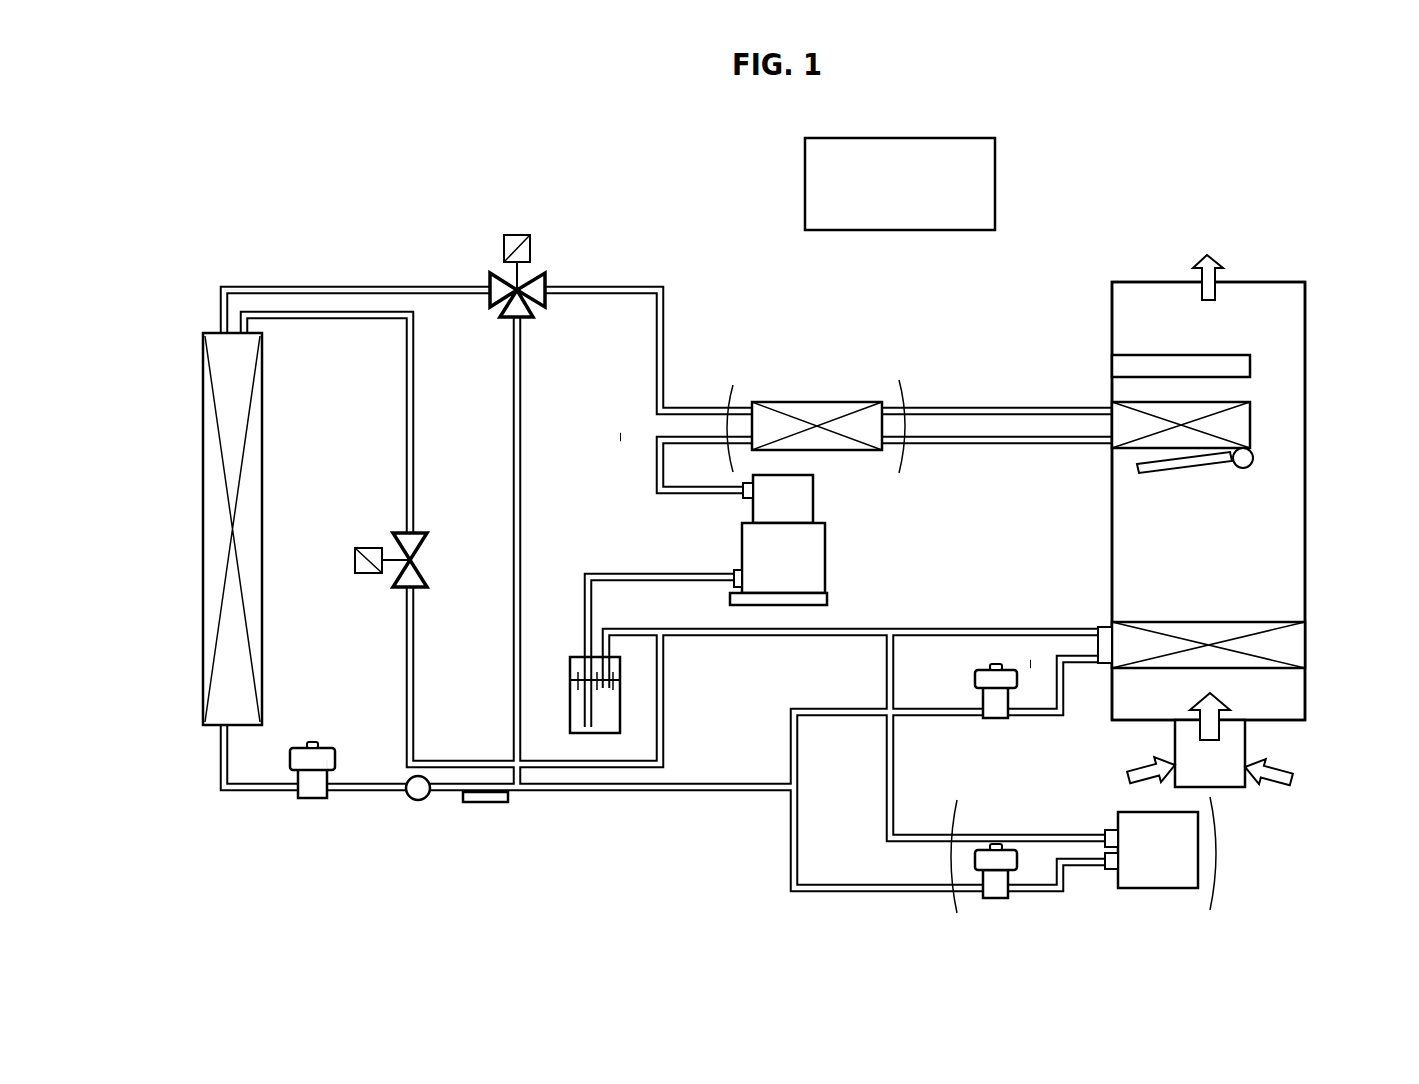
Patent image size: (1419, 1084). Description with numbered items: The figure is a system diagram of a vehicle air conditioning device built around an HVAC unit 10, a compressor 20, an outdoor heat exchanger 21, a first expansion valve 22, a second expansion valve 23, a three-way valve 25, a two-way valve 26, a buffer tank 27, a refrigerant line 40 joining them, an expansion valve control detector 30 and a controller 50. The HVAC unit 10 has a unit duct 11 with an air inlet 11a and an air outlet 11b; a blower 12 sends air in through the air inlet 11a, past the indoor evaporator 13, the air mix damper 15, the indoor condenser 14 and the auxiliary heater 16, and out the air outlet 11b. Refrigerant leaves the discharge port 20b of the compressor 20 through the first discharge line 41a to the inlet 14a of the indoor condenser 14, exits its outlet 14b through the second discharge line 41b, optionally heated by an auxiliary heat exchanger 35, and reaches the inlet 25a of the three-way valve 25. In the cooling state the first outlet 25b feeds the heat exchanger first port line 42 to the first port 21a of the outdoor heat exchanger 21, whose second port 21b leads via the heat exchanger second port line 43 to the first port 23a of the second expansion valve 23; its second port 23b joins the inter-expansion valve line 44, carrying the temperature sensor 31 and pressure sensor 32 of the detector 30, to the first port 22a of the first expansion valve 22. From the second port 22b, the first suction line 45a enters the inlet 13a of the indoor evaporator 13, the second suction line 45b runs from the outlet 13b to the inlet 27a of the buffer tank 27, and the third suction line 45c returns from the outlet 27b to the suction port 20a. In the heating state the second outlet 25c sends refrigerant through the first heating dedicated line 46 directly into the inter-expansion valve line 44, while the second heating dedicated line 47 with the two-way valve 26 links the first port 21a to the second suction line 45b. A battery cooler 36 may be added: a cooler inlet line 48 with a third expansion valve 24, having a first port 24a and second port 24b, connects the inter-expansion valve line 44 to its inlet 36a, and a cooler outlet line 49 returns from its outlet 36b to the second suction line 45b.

The HVAC unit 10 is at (1308, 301).
The unit duct 11 is at (1306, 513).
The air inlet 11a is at (1248, 725).
The air outlet 11b is at (1280, 282).
The blower 12 is at (1232, 790).
The indoor evaporator 13 is at (1296, 640).
The inlet 13a is at (1098, 662).
The outlet 13b is at (1098, 628).
The indoor condenser 14 is at (1250, 420).
The inlet 14a is at (1111, 449).
The outlet 14b is at (1111, 403).
The air mix damper 15 is at (1253, 456).
The auxiliary heater 16 is at (1248, 364).
The compressor 20 is at (812, 558).
The suction port 20a is at (733, 575).
The discharge port 20b is at (742, 492).
The outdoor heat exchanger 21 is at (205, 460).
The first port 21a is at (233, 330).
The second port 21b is at (222, 738).
The first expansion valve 22 is at (996, 719).
The first port 22a is at (984, 719).
The second port 22b is at (1007, 719).
The second expansion valve 23 is at (312, 799).
The first port 23a is at (297, 799).
The second port 23b is at (336, 762).
The third expansion valve 24 is at (996, 899).
The first port 24a is at (984, 899).
The second port 24b is at (1007, 899).
The three-way valve 25 is at (520, 233).
The inlet 25a is at (546, 285).
The first outlet 25b is at (490, 280).
The second outlet 25c is at (506, 314).
The two-way valve 26 is at (365, 548).
The buffer tank 27 is at (570, 720).
The inlet 27a is at (611, 656).
The outlet 27b is at (584, 656).
The expansion valve control detector 30 is at (497, 870).
The temperature sensor 31 is at (487, 803).
The pressure sensor 32 is at (418, 801).
The auxiliary heat exchanger 35 is at (810, 400).
The battery cooler 36 is at (1158, 888).
The inlet 36a is at (1104, 869).
The outlet 36b is at (1104, 835).
The refrigerant line 40 is at (231, 283).
The first discharge line 41a is at (658, 448).
The second discharge line 41b is at (940, 408).
The heat exchanger first port line 42 is at (298, 286).
The heat exchanger second port line 43 is at (226, 795).
The inter-expansion valve line 44 is at (608, 792).
The first suction line 45a is at (1030, 664).
The second suction line 45b is at (950, 630).
The third suction line 45c is at (612, 573).
The first heating dedicated line 46 is at (513, 472).
The second heating dedicated line 47 is at (407, 411).
The cooler inlet line 48 is at (791, 855).
The cooler outlet line 49 is at (887, 770).
The controller 50 is at (952, 138).